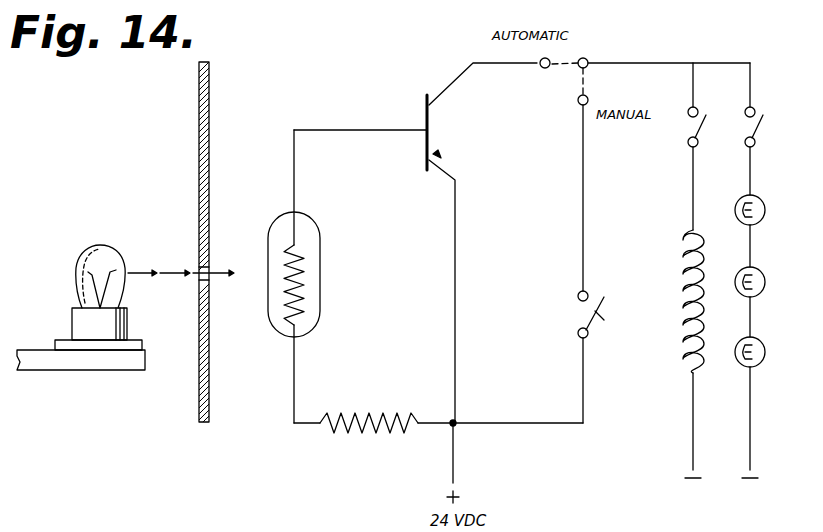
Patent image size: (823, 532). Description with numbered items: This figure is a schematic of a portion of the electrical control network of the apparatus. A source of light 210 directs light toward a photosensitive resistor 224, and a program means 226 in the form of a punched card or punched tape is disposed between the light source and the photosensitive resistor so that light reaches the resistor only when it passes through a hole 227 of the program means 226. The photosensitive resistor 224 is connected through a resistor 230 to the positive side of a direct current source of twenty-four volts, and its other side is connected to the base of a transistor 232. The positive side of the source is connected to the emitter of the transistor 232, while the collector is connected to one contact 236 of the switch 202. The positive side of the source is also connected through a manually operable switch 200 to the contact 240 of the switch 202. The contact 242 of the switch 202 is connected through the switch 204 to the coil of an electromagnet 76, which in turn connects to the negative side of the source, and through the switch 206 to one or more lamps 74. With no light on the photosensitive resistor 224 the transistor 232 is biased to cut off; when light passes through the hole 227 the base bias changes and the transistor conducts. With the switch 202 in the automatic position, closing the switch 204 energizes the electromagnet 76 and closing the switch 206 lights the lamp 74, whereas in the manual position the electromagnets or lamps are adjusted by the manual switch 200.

The source of light 210 is at (74, 238).
The program means 226 is at (210, 106).
The hole 227 is at (208, 272).
The photosensitive resistor 224 is at (325, 268).
The transistor 232 is at (409, 100).
The resistor 230 is at (362, 431).
The contact 236 is at (538, 66).
The contact 242 is at (589, 60).
The switch 202 is at (570, 75).
The contact 240 is at (589, 100).
The manually operable switch 200 is at (600, 330).
The switch 204 is at (710, 134).
The switch 206 is at (768, 134).
The electromagnet 76 is at (678, 266).
The lamp 74 is at (772, 217).